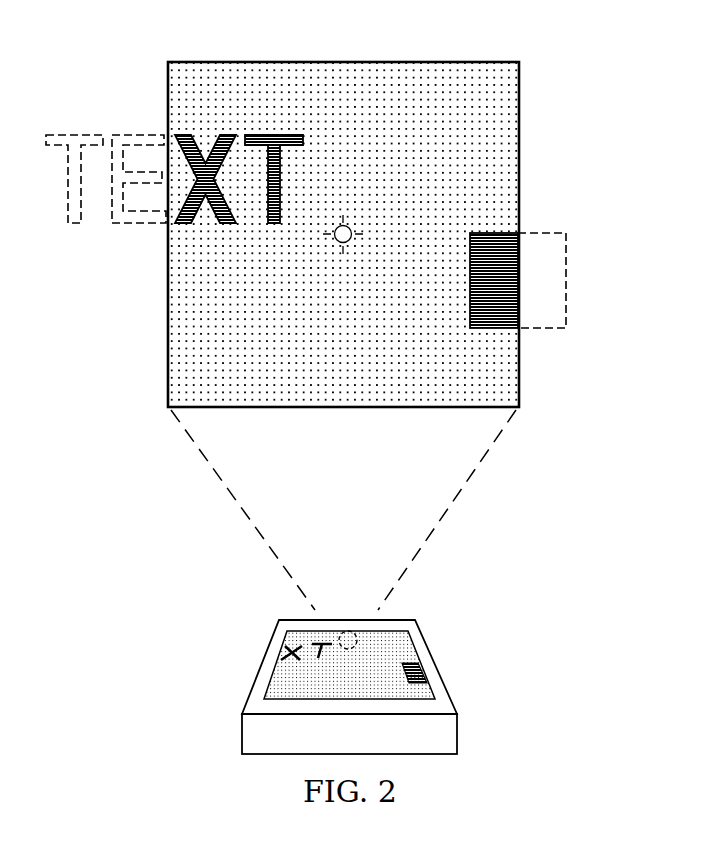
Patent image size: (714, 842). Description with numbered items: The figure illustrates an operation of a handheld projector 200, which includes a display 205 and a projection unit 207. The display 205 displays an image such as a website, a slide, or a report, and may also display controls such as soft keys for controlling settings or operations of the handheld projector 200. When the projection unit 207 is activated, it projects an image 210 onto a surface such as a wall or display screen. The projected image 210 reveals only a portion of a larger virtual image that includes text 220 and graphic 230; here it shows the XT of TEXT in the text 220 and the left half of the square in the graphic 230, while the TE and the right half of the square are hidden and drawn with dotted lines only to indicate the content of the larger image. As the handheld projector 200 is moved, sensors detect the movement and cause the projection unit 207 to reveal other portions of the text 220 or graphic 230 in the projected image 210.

The handheld projector 200 is at (438, 668).
The display 205 is at (290, 688).
The projection unit 207 is at (345, 624).
The projected image 210 is at (341, 62).
The text 220 is at (136, 109).
The graphic 230 is at (566, 282).